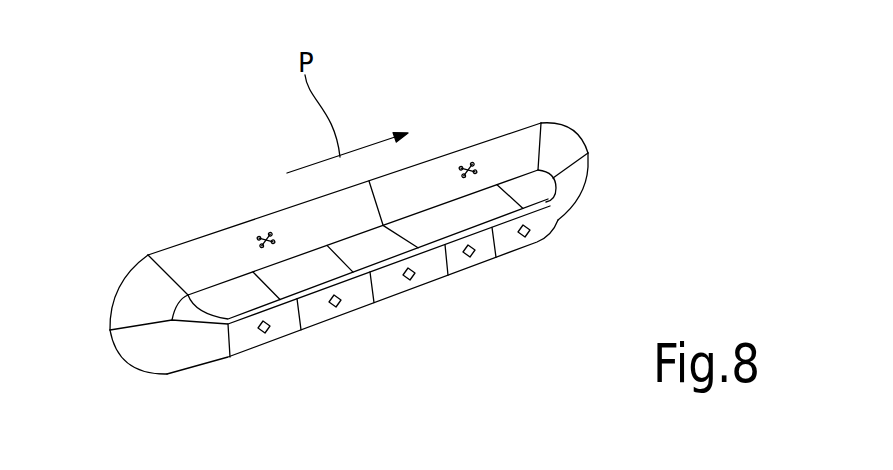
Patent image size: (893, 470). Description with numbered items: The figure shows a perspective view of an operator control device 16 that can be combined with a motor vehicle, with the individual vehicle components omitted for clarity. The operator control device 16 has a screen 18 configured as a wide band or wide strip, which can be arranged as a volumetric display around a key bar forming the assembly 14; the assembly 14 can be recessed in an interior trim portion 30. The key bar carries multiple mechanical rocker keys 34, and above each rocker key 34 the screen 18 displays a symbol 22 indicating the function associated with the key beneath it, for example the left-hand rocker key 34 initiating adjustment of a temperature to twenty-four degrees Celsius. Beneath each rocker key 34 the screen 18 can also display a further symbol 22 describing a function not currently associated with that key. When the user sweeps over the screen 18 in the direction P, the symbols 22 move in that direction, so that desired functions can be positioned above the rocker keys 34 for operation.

The interior trim portion 30 is at (78, 251).
The operator control device 16 is at (493, 105).
The screen 18 is at (563, 142).
The assembly 14 is at (553, 193).
The symbol 22 is at (191, 240).
The mechanical rocker key 34 is at (230, 358).